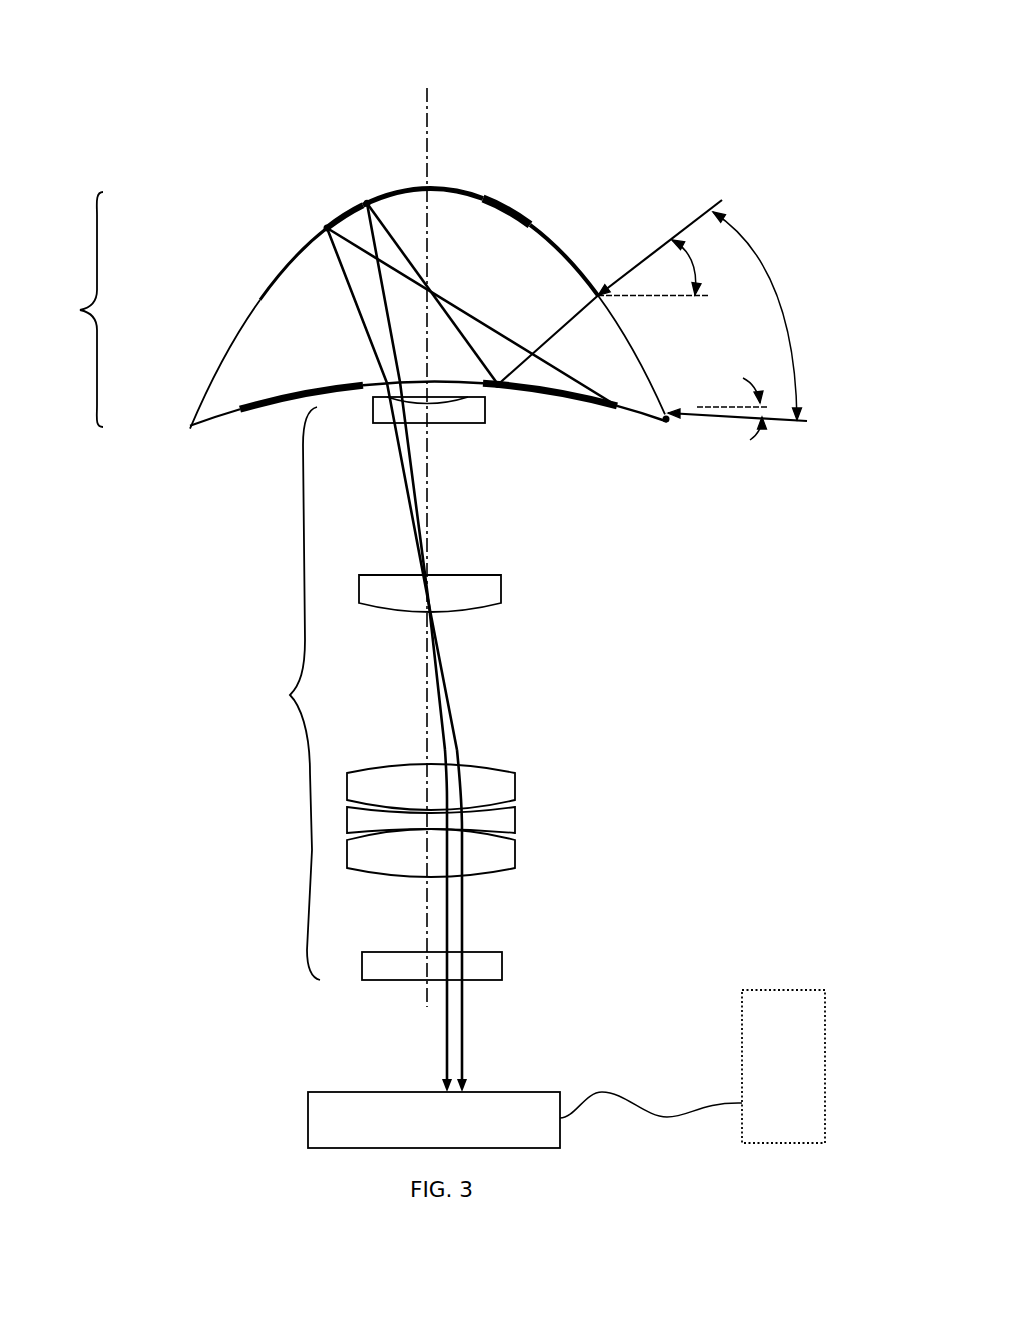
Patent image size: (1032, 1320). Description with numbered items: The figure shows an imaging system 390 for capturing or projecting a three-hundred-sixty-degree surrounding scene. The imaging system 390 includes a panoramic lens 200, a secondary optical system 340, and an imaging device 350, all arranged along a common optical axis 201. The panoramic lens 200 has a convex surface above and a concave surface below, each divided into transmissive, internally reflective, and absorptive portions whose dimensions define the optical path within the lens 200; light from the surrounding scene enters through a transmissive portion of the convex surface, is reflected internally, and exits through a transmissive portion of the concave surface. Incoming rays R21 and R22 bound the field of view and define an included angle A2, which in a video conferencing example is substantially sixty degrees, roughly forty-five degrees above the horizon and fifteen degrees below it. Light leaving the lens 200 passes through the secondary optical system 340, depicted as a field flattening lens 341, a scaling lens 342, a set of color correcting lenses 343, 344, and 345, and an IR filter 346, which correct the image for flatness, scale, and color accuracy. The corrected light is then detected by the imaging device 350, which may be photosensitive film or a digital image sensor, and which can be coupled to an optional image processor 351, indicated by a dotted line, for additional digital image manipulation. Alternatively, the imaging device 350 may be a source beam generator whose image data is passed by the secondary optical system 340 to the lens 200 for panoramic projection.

The imaging system 390 is at (98, 60).
The optical axis 201 is at (423, 142).
The panoramic lens 200 is at (67, 309).
The ray R21 is at (693, 217).
The ray R22 is at (783, 422).
The included angle A2 is at (757, 316).
The secondary optical system 340 is at (282, 693).
The field flattening lens 341 is at (443, 425).
The scaling lens 342 is at (472, 610).
The color correcting lens 343 is at (487, 763).
The color correcting lens 344 is at (517, 818).
The color correcting lens 345 is at (485, 873).
The IR filter 346 is at (487, 980).
The imaging device 350 is at (452, 1130).
The image processor 351 is at (802, 1077).